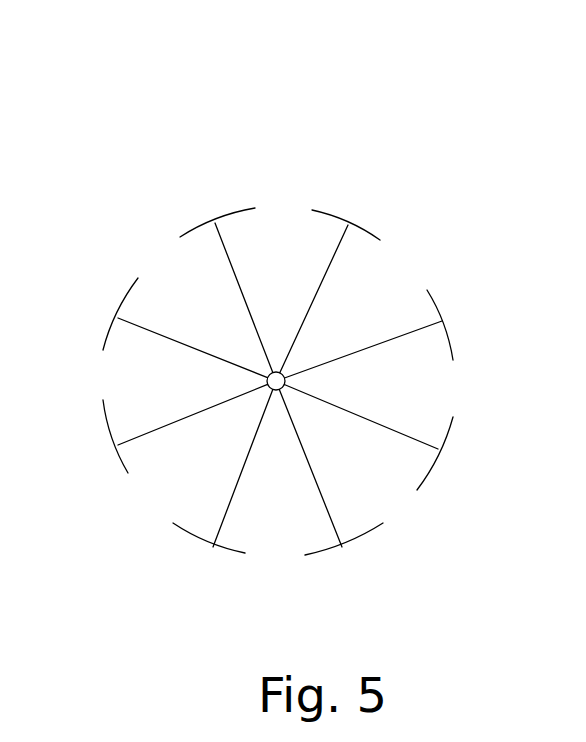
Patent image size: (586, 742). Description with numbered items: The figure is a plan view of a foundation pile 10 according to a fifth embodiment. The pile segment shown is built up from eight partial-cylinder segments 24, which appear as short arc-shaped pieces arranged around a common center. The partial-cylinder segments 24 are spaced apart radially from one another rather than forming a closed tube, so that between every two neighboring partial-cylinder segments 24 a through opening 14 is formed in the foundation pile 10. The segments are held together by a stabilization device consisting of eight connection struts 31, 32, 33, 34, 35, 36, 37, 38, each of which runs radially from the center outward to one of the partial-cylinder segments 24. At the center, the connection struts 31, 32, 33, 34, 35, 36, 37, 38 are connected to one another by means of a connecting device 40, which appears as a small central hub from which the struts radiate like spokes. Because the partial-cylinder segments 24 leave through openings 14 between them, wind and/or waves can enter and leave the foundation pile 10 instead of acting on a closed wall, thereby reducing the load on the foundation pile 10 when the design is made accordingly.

The foundation pile 10 is at (98, 289).
The through opening 14 is at (143, 492).
The partial-cylinder segment 24 is at (105, 415).
The connection strut 31 is at (322, 502).
The connection strut 32 is at (229, 503).
The connection strut 33 is at (185, 416).
The connection strut 34 is at (168, 338).
The connection strut 35 is at (226, 247).
The connection strut 36 is at (332, 268).
The connection strut 37 is at (408, 337).
The connection strut 38 is at (392, 430).
The connecting device 40 is at (279, 372).